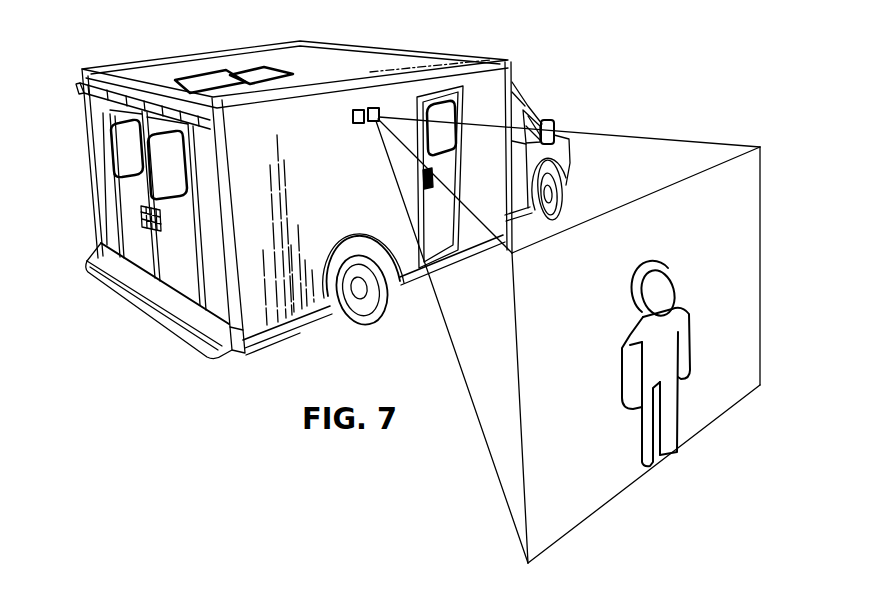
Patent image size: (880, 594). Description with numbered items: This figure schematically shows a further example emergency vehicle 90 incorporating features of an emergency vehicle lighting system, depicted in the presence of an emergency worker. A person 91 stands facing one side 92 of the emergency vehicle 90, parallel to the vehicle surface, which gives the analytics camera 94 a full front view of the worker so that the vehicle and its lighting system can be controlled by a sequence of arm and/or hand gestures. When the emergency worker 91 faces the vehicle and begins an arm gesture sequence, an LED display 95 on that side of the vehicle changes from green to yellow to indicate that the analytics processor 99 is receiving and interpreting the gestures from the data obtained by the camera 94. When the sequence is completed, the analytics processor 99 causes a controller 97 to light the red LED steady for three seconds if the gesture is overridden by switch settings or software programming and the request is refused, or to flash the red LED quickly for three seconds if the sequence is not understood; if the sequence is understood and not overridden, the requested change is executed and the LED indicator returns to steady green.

The emergency vehicle 90 is at (285, 57).
The person 91 is at (682, 273).
The side of emergency vehicle 92 is at (408, 303).
The analytics camera 94 is at (373, 108).
The LED display 95 is at (357, 110).
The controller 97 is at (266, 80).
The analytics processor 99 is at (212, 82).